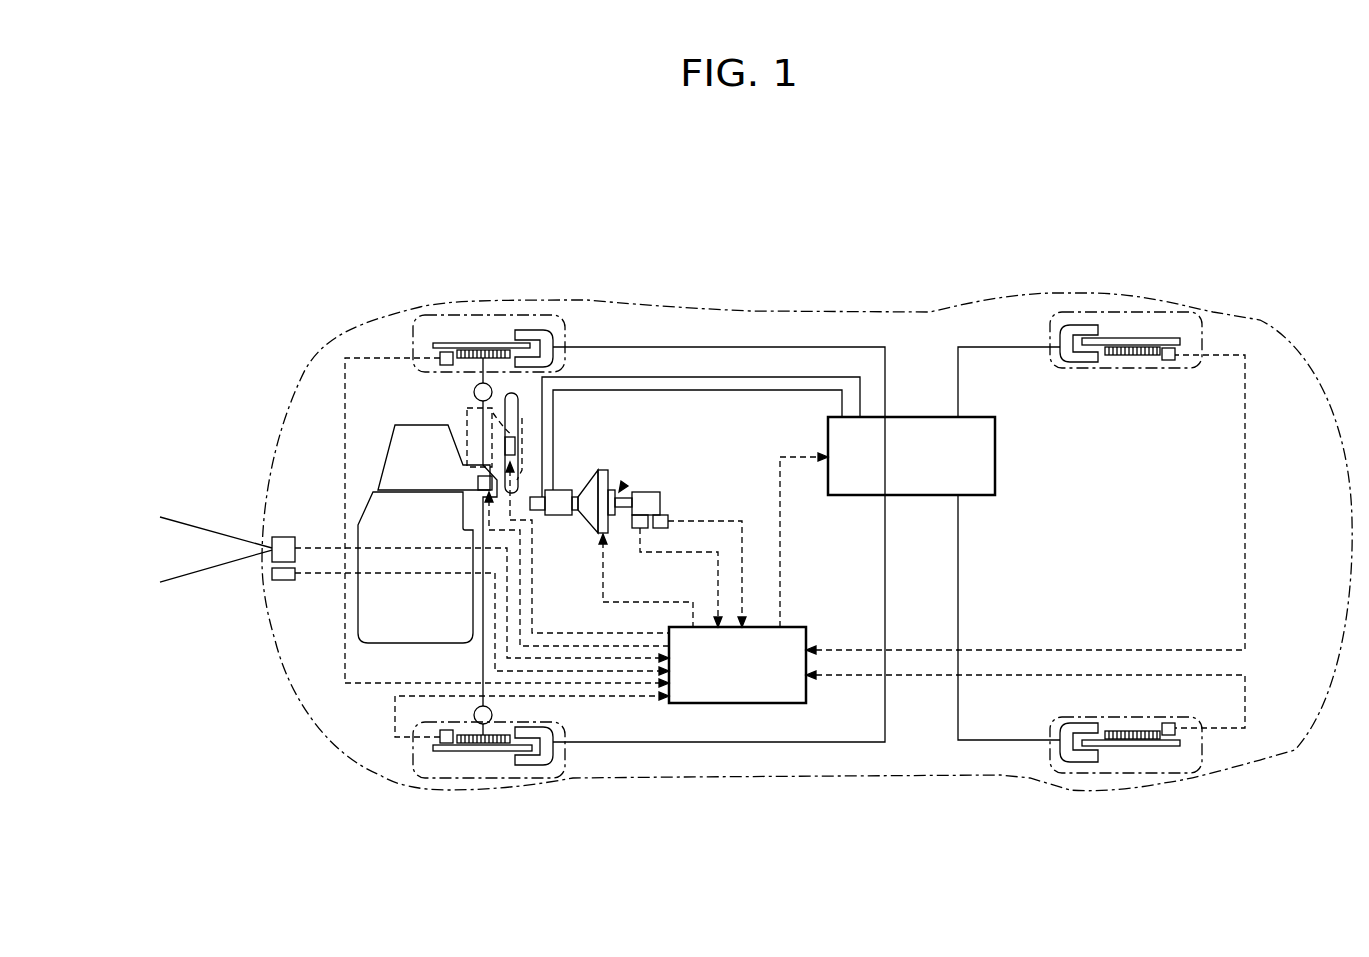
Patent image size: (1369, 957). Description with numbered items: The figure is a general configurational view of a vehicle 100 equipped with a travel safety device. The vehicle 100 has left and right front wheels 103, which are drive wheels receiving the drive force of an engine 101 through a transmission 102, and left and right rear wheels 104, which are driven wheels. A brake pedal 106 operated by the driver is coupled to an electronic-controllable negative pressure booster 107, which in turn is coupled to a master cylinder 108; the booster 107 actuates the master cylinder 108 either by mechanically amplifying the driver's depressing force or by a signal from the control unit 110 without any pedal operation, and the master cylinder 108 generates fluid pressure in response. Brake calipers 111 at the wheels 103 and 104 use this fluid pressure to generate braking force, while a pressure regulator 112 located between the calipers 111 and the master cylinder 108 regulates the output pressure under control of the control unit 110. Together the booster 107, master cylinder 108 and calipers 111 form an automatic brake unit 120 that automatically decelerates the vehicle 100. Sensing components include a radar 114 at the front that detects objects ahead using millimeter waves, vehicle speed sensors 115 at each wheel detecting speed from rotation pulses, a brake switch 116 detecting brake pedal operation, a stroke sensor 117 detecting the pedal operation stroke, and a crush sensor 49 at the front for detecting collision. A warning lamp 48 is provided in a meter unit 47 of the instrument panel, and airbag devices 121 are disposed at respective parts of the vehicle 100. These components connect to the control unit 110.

The vehicle 100 is at (317, 333).
The engine 101 is at (358, 610).
The transmission 102 is at (380, 462).
The front wheels 103 is at (521, 315).
The rear wheels 104 is at (1097, 312).
The brake pedal 106 is at (650, 492).
The electronic-controllable negative pressure booster 107 is at (603, 468).
The master cylinder 108 is at (558, 515).
The control unit 110 is at (806, 630).
The brake calipers 111 is at (516, 332).
The pressure regulator 112 is at (996, 458).
The radar 114 is at (283, 536).
The vehicle speed sensors 115 is at (440, 356).
The brake switch 116 is at (668, 521).
The stroke sensor 117 is at (640, 530).
The automatic brake unit 120 is at (624, 485).
The airbag devices 121 is at (530, 428).
The meter unit 47 is at (470, 415).
The warning lamp 48 is at (478, 480).
The crush sensor 49 is at (272, 573).